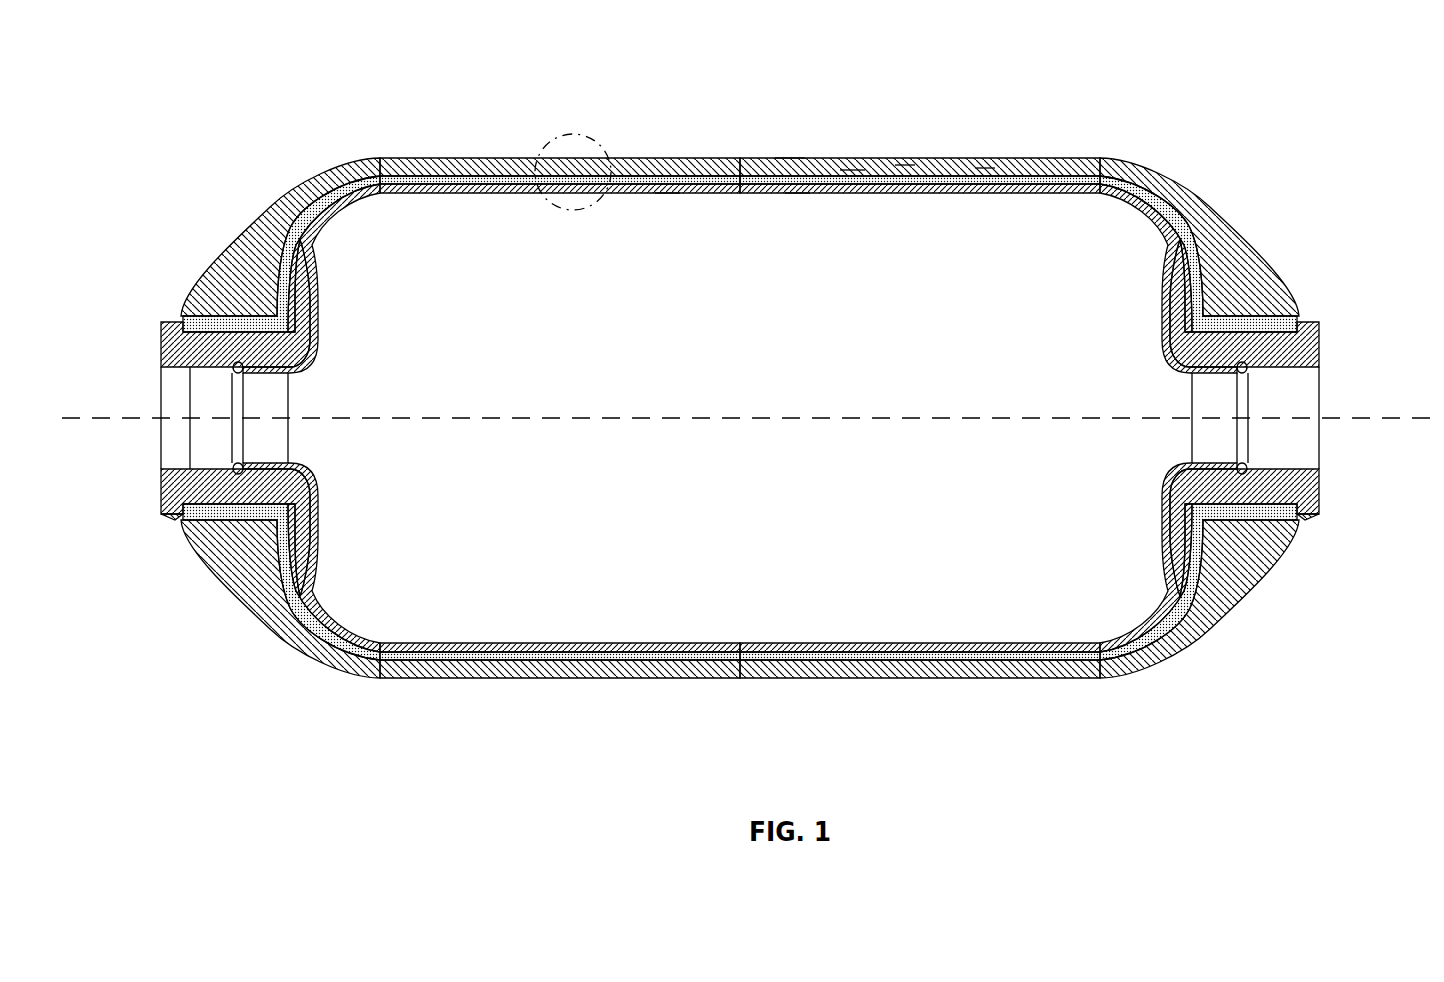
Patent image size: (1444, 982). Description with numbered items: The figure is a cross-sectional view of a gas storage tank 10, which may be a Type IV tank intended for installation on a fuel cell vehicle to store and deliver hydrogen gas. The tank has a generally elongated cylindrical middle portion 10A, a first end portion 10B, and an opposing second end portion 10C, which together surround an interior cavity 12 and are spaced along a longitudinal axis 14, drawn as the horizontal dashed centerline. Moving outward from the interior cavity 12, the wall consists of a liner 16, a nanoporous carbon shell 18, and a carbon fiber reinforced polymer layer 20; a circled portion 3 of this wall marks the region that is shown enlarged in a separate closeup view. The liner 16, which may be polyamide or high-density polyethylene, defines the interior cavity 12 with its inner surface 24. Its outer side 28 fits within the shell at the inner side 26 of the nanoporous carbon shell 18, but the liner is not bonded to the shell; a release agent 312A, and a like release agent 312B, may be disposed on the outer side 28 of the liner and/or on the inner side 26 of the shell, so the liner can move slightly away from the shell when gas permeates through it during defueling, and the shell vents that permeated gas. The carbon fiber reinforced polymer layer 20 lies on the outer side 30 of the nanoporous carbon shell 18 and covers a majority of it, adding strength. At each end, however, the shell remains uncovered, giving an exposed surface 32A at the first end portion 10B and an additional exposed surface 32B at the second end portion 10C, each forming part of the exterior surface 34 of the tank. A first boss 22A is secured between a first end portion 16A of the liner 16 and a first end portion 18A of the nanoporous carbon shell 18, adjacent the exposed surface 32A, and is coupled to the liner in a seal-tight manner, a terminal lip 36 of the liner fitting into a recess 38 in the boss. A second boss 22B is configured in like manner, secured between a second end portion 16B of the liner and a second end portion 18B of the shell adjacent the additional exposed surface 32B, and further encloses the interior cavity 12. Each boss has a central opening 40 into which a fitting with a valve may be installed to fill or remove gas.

The gas storage tank 10 is at (1278, 120).
The cylindrical middle portion 10A is at (803, 686).
The first end portion 10B is at (257, 681).
The second end portion 10C is at (1210, 685).
The interior cavity 12 is at (767, 378).
The longitudinal axis 14 is at (1398, 416).
The liner 16 is at (716, 645).
The first end portion of the liner 16A is at (320, 540).
The second end portion of the liner 16B is at (1166, 560).
The nanoporous carbon shell 18 is at (604, 665).
The first end portion of the nanoporous carbon shell 18A is at (272, 560).
The second end portion of the nanoporous carbon shell 18B is at (1212, 590).
The carbon fiber reinforced polymer layer 20 is at (655, 675).
The first boss 22A is at (161, 345).
The second boss 22B is at (1319, 355).
The inner surface 24 is at (796, 198).
The inner side 26 is at (668, 195).
The outer side 28 is at (791, 158).
The outer side 30 is at (905, 165).
The release agent 312A is at (852, 170).
The second composite layer 312B is at (986, 166).
The exposed surface 32A is at (178, 520).
The additional exposed surface 32B is at (1308, 520).
The exterior surface 34 is at (227, 631).
The terminal lip 36 is at (263, 374).
The recess 38 is at (243, 433).
The central opening 40 is at (200, 438).
The detail region of FIG. 3 is at (598, 136).